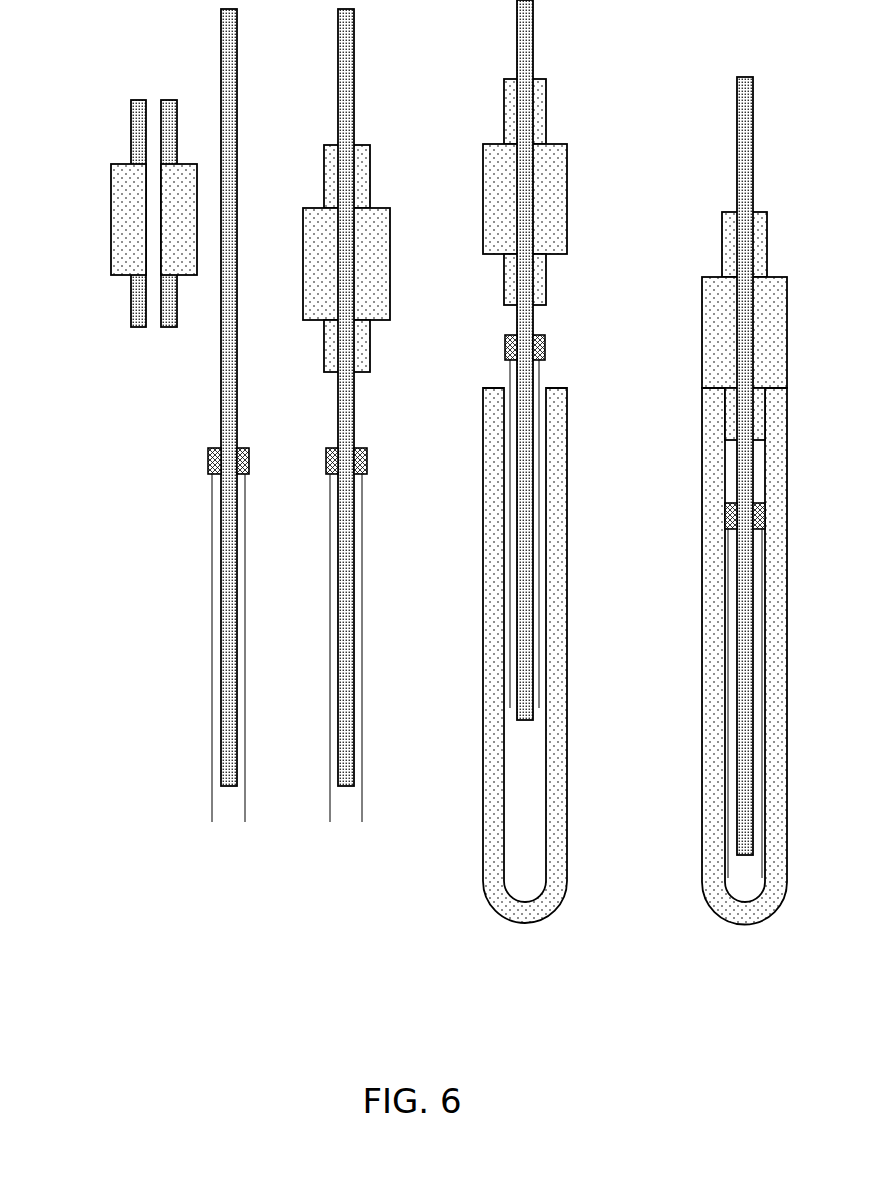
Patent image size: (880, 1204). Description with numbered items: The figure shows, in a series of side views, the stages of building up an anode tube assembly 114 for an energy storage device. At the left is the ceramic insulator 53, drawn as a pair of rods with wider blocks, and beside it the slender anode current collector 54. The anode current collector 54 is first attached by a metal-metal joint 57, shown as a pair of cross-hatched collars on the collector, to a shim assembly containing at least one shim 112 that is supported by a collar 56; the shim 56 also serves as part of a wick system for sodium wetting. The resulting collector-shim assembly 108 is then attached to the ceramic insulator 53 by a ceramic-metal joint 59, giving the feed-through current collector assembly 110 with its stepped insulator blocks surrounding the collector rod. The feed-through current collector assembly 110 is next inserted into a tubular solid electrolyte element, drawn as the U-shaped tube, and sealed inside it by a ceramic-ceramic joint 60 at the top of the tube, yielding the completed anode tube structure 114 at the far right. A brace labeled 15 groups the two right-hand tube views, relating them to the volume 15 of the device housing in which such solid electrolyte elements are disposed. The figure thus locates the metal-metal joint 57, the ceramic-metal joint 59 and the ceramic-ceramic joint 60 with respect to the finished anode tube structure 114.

The ceramic insulator 53 is at (110, 194).
The anode current collector 54 is at (220, 377).
The shim 56 is at (208, 466).
The metal-metal joint 57 is at (207, 442).
The ceramic-metal joint 59 is at (365, 402).
The ceramic-ceramic joint 60 is at (689, 400).
The collector-shim assembly 108 is at (172, 415).
The feed-through current collector assembly 110 is at (371, 415).
The shim 112 is at (243, 683).
The anode tube assembly 114 is at (700, 479).
The volume 15 is at (702, 720).